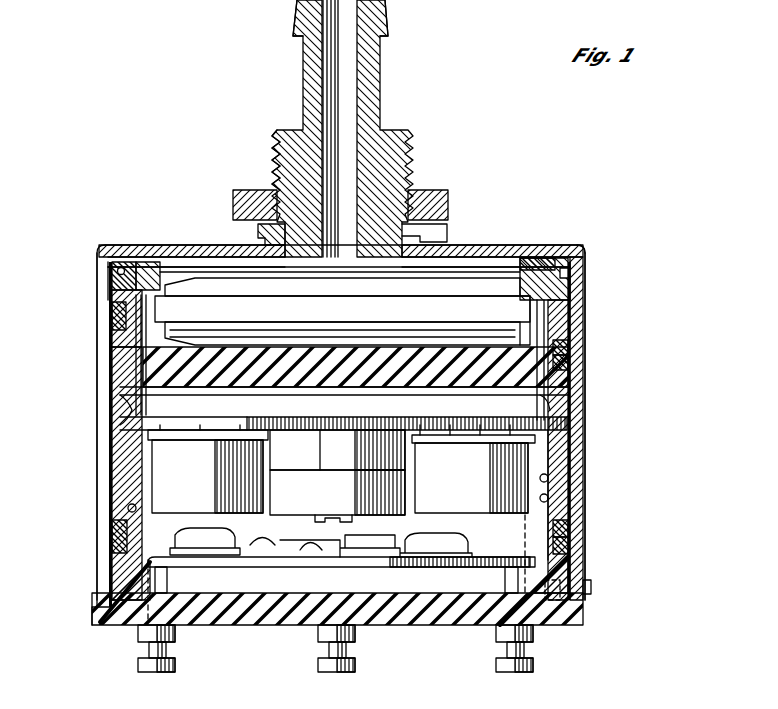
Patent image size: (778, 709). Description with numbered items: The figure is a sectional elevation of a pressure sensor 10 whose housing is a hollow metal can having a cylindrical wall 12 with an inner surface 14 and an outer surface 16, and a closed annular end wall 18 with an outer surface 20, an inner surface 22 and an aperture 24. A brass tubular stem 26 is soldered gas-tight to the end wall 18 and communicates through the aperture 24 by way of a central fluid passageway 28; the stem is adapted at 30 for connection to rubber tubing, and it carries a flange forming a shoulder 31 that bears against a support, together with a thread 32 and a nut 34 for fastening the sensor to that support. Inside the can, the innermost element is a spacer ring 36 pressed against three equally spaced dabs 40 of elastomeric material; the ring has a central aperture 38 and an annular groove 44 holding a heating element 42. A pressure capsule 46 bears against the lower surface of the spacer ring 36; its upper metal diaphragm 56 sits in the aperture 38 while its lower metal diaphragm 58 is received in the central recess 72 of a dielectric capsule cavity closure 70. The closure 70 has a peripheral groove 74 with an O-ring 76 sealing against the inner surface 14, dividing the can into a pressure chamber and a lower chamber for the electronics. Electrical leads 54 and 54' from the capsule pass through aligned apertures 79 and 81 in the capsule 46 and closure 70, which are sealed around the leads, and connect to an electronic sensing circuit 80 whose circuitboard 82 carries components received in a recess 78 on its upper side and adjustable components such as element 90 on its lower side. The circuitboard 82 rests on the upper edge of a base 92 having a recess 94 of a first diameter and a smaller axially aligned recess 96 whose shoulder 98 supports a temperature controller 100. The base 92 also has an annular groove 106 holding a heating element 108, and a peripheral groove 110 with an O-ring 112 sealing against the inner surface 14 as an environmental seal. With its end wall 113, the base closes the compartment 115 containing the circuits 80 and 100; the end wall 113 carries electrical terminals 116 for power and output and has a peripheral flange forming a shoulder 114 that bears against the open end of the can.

The pressure sensor 10 is at (632, 216).
The cylindrical wall 12 is at (575, 450).
The inner surface 14 is at (566, 478).
The outer surface 16 is at (582, 510).
The closed annular end wall 18 is at (490, 245).
The outer surface 20 is at (514, 245).
The inner surface 22 is at (588, 272).
The aperture 24 is at (308, 257).
The tubular stem 26 is at (305, 97).
The central fluid passageway 28 is at (347, 90).
The connection portion of stem 30 is at (300, 40).
The shoulder 31 is at (425, 232).
The thread 32 is at (272, 142).
The nut 34 is at (243, 190).
The spacer ring 36 is at (108, 288).
The central aperture 38 is at (168, 262).
The dabs 40 is at (548, 245).
The heating element 42 is at (566, 290).
The annular groove 44 is at (575, 245).
The pressure capsule 46 is at (192, 337).
The electrical lead 54 is at (516, 360).
The common electrical lead 54' is at (171, 355).
The metal diaphragm 56 is at (222, 278).
The metal diaphragm 58 is at (435, 334).
The capsule cavity closure 70 is at (580, 400).
The central recess 72 is at (118, 342).
The peripheral groove 74 is at (572, 352).
The O-ring 76 is at (566, 362).
The recess 78 is at (128, 402).
The aperture 79 is at (530, 318).
The electronic sensing circuit 80 is at (115, 497).
The aperture 81 is at (556, 394).
The circuitboard 82 is at (148, 443).
The adjustable component 90 is at (318, 518).
The base 92 is at (100, 484).
The recess 94 is at (112, 522).
The recess 96 is at (148, 528).
The shoulder 98 is at (104, 571).
The temperature controller 100 is at (211, 572).
The annular groove 106 is at (576, 526).
The heating element 108 is at (560, 498).
The peripheral groove 110 is at (576, 546).
The O-ring 112 is at (572, 566).
The end wall 113 is at (250, 615).
The shoulder 114 is at (586, 600).
The compartment 115 is at (432, 539).
The electrical terminals 116 is at (147, 652).